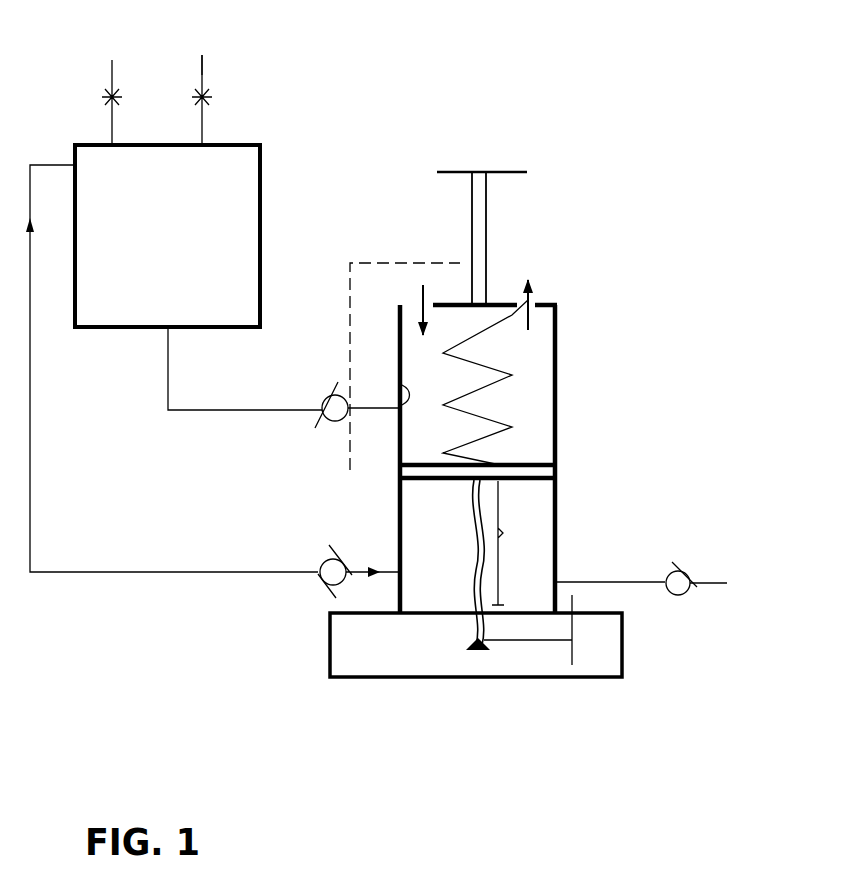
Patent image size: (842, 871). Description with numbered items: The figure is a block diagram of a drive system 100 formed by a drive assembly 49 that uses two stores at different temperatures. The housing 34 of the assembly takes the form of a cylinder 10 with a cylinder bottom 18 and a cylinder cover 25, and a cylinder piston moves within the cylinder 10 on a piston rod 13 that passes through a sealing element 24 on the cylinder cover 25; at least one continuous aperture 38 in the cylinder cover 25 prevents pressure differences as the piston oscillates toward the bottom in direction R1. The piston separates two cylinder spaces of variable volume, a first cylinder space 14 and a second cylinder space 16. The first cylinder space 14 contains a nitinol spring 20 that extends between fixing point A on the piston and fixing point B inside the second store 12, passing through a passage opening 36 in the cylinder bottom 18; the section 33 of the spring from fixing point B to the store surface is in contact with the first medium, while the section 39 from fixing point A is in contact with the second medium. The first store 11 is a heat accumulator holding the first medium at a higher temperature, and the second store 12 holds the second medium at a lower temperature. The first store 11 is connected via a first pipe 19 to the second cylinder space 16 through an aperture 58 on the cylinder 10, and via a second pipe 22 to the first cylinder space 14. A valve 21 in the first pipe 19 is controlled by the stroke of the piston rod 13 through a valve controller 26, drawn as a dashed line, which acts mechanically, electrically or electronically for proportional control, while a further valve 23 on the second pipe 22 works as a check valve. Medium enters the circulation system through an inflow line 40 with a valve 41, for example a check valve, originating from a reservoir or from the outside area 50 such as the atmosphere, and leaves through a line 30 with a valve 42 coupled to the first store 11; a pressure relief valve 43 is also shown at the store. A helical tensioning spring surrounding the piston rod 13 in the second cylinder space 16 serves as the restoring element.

The drive system 100 is at (212, 641).
The cylinder 10 is at (400, 512).
The first store 11 is at (167, 236).
The second store 12 is at (392, 680).
The piston rod 13 is at (487, 207).
The first cylinder space 14 is at (560, 492).
The second cylinder space 16 is at (550, 362).
The cylinder bottom 18 is at (560, 582).
The first pipe 19 is at (222, 410).
The nitinol spring 20 is at (473, 553).
The valve 21 is at (322, 421).
The second pipe 22 is at (186, 572).
The further valve 23 is at (318, 552).
The sealing element 24 is at (495, 328).
The cylinder cover 25 is at (548, 303).
The valve controller 26 is at (348, 310).
The line 30 is at (202, 58).
The section 33 is at (543, 630).
The housing 34 is at (606, 402).
The passage opening 36 is at (470, 600).
The aperture 38 is at (436, 303).
The section 39 is at (515, 543).
The line 40 is at (658, 582).
The valve 41 is at (690, 578).
The valve 42 is at (195, 97).
The pressure relief valve 43 is at (104, 97).
The drive assembly 49 is at (600, 177).
The outside area 50 is at (740, 626).
The aperture 58 is at (401, 390).
The direction R1 is at (514, 392).
The fixing point A is at (477, 482).
The fixing point B is at (470, 632).